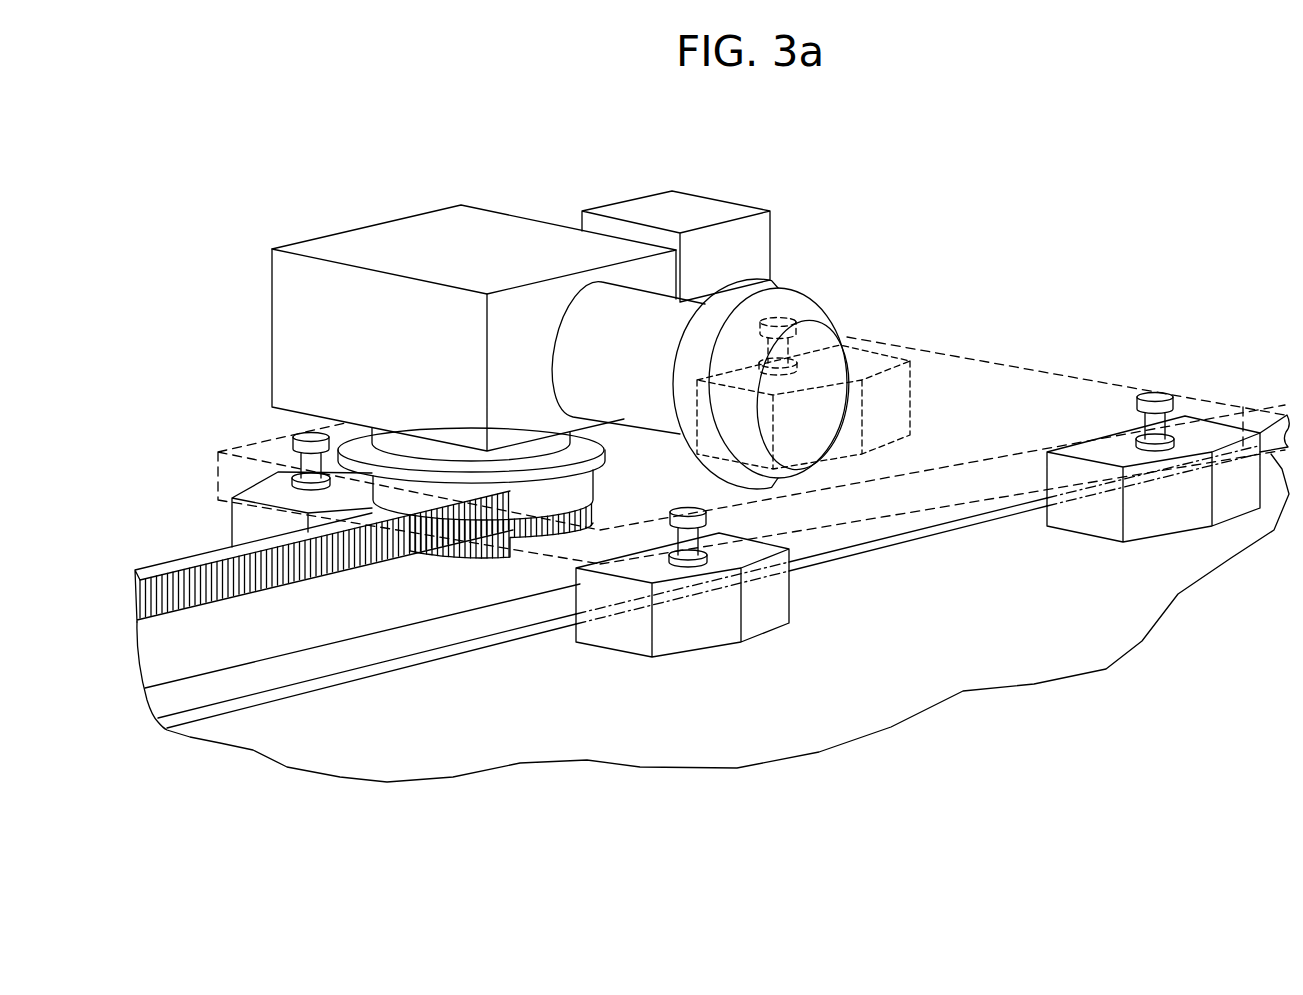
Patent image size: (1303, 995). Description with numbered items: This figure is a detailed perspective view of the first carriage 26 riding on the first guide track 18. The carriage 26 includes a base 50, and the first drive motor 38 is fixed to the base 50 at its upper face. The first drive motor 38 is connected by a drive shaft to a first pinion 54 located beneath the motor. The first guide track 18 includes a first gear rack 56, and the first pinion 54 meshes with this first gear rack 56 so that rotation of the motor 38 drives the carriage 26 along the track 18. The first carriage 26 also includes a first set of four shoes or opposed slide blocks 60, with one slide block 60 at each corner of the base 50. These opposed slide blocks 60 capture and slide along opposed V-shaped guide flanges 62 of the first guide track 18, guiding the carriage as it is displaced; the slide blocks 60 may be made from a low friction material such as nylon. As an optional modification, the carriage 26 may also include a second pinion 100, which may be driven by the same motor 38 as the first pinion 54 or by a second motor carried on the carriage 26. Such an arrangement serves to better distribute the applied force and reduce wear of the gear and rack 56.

The first carriage 26 is at (947, 215).
The first drive motor 38 is at (318, 343).
The base 50 is at (1032, 363).
The first pinion 54 is at (498, 560).
The first gear rack 56 is at (171, 570).
The slide blocks 60 is at (863, 362).
The V-shaped guide flanges 62 is at (257, 680).
The first guide track 18 is at (177, 655).
The second pinion 100 is at (600, 505).